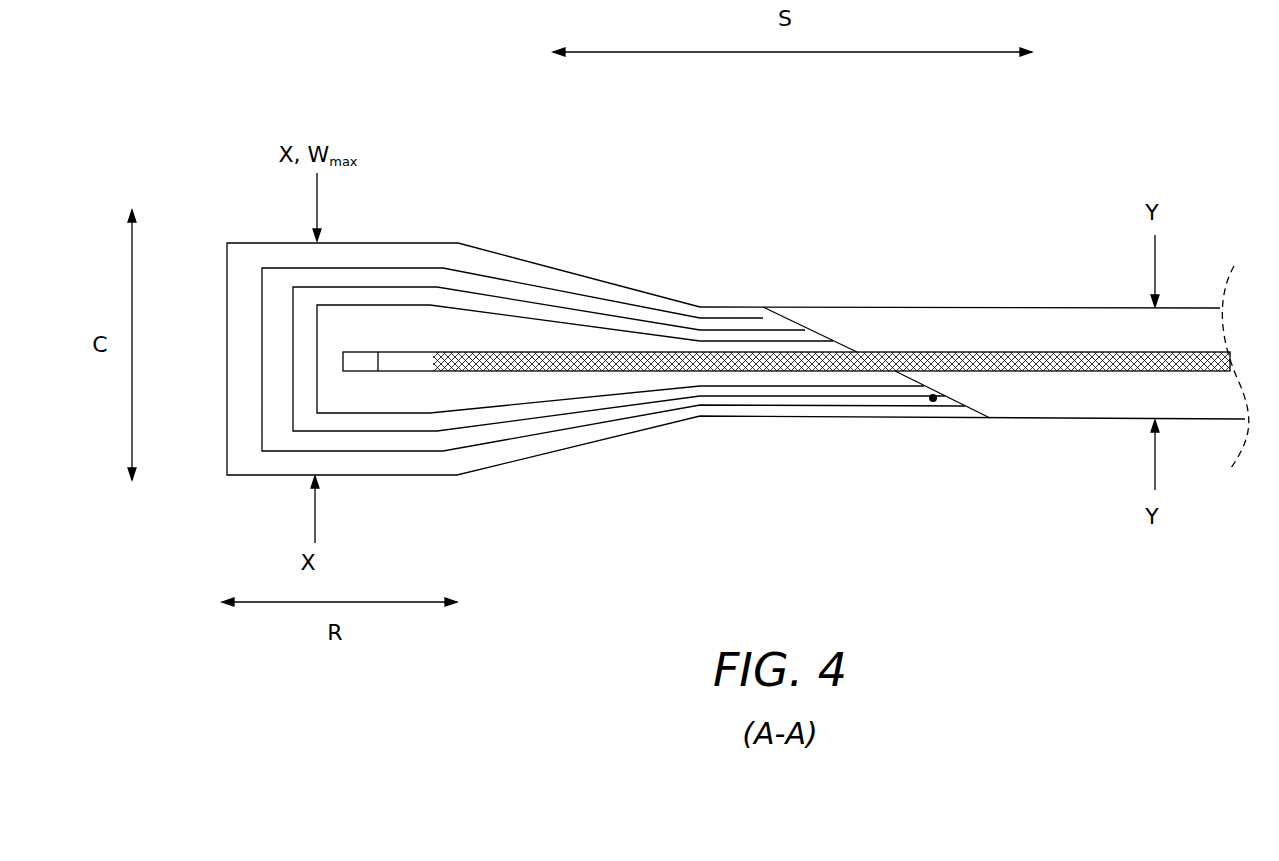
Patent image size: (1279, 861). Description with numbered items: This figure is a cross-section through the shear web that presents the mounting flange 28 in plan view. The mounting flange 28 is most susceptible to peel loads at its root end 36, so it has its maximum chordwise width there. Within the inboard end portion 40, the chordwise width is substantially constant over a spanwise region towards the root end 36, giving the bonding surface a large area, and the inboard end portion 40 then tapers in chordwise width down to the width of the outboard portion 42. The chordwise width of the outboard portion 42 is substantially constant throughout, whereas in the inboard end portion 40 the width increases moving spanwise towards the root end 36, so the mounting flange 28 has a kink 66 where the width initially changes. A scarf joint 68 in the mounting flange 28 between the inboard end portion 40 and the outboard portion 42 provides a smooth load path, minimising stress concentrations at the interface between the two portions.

The mounting flange 28 is at (858, 440).
The root end 36 is at (228, 355).
The inboard end portion 40 is at (558, 250).
The outboard portion 42 is at (1006, 286).
The kink 66 is at (714, 290).
The scarf joint 68 is at (933, 398).